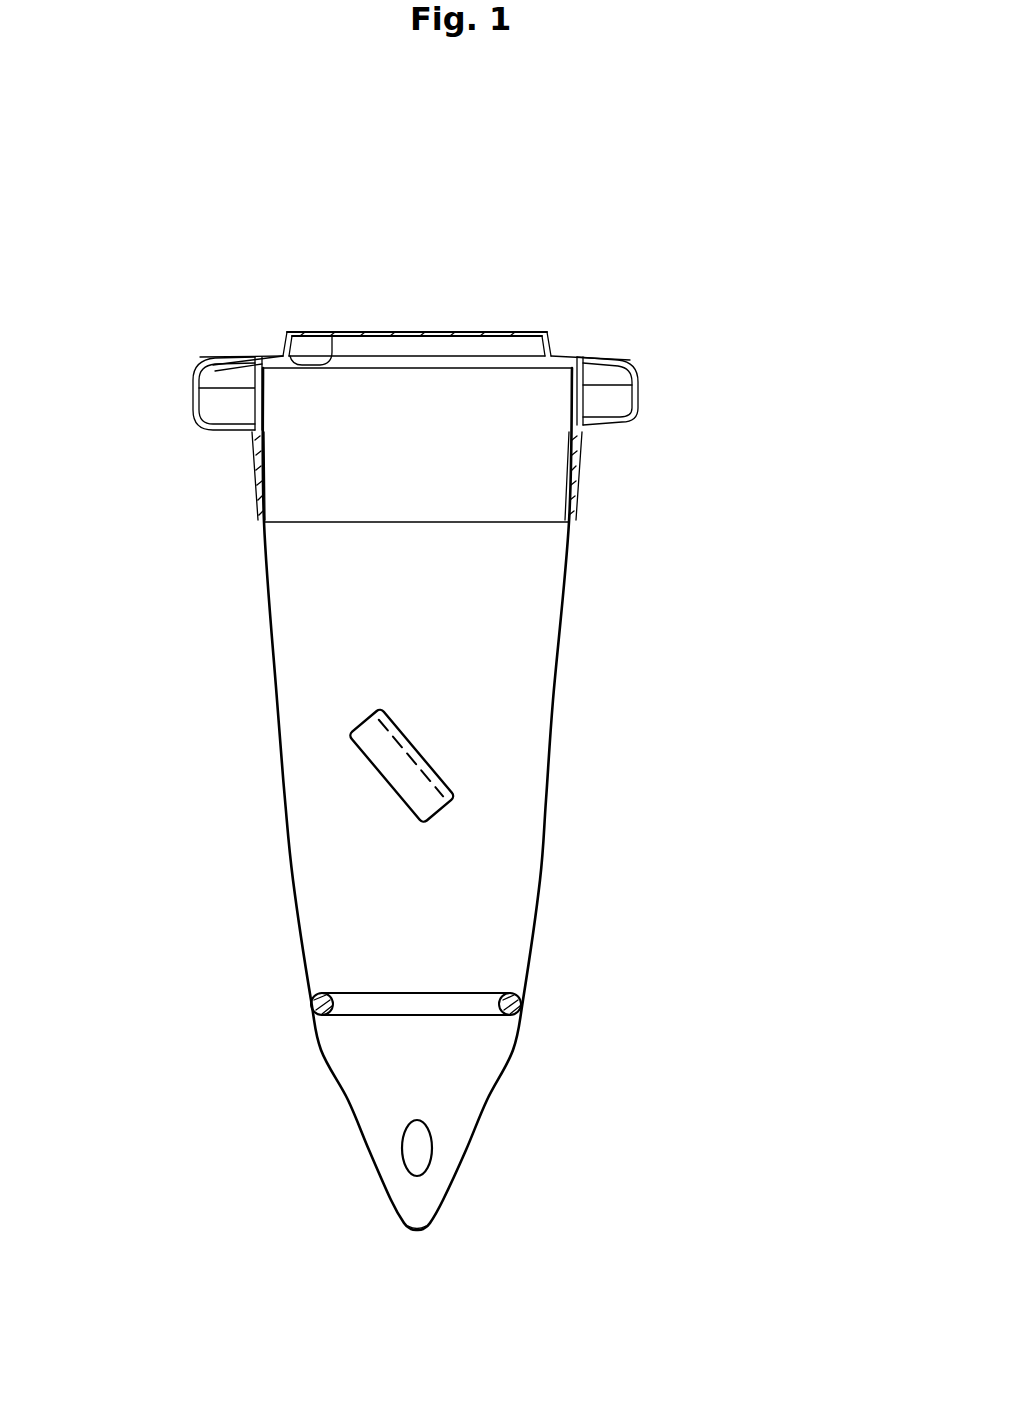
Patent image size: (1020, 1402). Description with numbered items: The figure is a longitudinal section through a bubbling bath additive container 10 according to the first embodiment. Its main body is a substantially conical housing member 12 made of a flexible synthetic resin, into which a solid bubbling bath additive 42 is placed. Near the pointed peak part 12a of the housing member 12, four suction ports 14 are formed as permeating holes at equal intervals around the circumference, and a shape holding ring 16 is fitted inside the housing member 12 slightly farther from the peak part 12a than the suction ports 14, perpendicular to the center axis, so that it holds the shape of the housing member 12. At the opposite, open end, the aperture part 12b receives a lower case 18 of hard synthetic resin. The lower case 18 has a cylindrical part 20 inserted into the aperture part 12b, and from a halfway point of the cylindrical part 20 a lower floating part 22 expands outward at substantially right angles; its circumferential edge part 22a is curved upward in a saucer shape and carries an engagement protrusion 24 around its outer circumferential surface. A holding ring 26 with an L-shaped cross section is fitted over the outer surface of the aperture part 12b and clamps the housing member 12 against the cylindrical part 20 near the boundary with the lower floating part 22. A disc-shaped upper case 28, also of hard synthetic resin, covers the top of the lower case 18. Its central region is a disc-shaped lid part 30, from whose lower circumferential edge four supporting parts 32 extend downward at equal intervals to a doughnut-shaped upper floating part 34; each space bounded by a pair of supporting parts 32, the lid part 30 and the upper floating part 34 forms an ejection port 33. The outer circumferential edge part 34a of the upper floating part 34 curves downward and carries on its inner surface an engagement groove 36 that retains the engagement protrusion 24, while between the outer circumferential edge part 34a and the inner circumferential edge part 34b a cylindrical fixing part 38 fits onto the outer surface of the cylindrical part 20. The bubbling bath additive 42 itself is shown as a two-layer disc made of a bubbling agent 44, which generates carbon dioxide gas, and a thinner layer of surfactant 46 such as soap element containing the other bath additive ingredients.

The bubbling bath additive container 10 is at (665, 214).
The housing member 12 is at (541, 882).
The peak part 12a is at (417, 1232).
The aperture part 12b is at (578, 488).
The suction port 14 is at (418, 1143).
The shape holding ring 16 is at (453, 1002).
The lower case 18 is at (650, 437).
The cylindrical part 20 is at (337, 523).
The lower floating part 22 is at (220, 433).
The circumferential edge part 22a is at (210, 363).
The engagement protrusion 24 is at (196, 392).
The holding ring 26 is at (253, 470).
The upper case 28 is at (609, 352).
The lid part 30 is at (450, 330).
The supporting part 32 is at (286, 351).
The ejection port 33 is at (395, 345).
The upper floating part 34 is at (633, 368).
The outer circumferential edge part 34a is at (640, 386).
The inner circumferential edge part 34b is at (333, 363).
The engagement groove 36 is at (640, 400).
The cylindrical fixing part 38 is at (247, 365).
The bubbling bath additive 42 is at (433, 763).
The bubbling agent 44 is at (403, 788).
The surfactant 46 is at (377, 718).